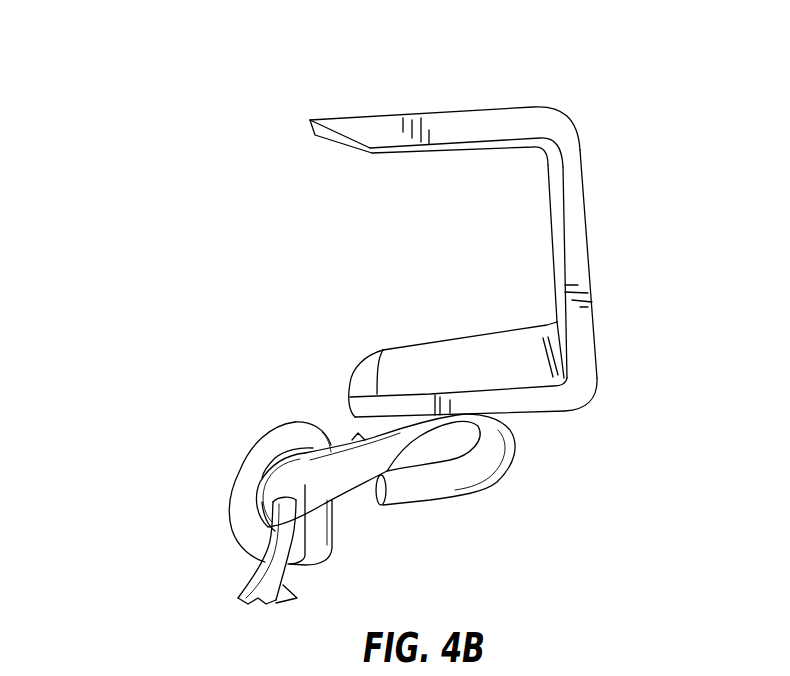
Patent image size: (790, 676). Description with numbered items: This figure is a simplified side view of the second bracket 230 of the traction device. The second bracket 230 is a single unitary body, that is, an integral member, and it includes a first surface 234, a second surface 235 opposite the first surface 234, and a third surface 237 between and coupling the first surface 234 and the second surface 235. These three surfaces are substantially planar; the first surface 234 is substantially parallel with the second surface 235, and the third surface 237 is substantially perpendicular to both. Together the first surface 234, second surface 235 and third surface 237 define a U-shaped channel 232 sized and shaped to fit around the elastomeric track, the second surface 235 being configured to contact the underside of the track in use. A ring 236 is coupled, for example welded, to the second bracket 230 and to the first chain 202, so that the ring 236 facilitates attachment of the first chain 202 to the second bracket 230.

The second bracket 230 is at (176, 105).
The U-shaped channel 232 is at (382, 262).
The second surface 235 is at (452, 106).
The third surface 237 is at (590, 236).
The first surface 234 is at (543, 413).
The ring 236 is at (377, 453).
The first chain 202 is at (318, 538).